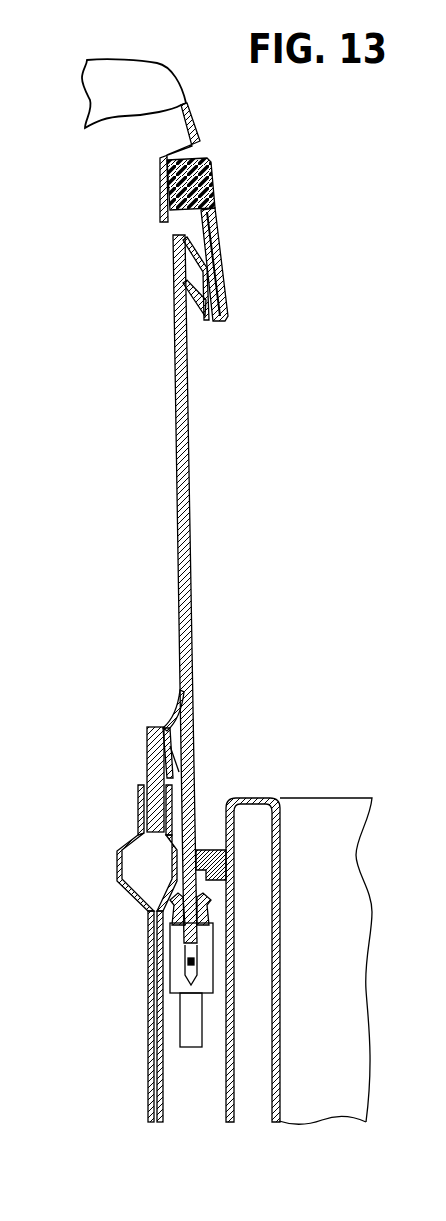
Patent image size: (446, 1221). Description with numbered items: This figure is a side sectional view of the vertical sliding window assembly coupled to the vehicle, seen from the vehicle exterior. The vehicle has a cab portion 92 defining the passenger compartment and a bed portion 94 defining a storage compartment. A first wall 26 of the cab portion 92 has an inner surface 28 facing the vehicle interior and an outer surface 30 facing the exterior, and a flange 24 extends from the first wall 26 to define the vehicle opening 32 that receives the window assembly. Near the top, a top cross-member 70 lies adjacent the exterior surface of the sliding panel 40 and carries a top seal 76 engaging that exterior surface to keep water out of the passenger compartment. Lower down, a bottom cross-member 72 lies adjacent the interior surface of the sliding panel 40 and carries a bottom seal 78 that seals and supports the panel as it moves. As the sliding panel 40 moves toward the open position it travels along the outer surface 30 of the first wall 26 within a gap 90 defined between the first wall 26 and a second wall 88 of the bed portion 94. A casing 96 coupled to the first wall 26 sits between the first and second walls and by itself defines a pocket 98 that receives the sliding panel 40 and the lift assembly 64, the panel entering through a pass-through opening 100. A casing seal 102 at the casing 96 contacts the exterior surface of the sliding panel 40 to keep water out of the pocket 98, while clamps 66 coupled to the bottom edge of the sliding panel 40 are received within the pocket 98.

The cab portion 92 is at (125, 72).
The flange 24 is at (158, 206).
The top cross-member 70 is at (210, 186).
The top seal 76 is at (211, 331).
The sliding panel 40 is at (188, 490).
The bottom seal 78 is at (161, 720).
The bottom cross-member 72 is at (158, 724).
The vehicle opening 32 is at (148, 788).
The first wall 26 is at (140, 801).
The casing seal 102 is at (173, 864).
The inner surface 28 is at (144, 1014).
The lift assembly 64 is at (153, 1040).
The clamps 66 is at (215, 958).
The second wall 88 is at (232, 837).
The bed portion 94 is at (333, 805).
The casing 96 is at (221, 1091).
The gap 90 is at (205, 816).
The pass-through opening 100 is at (209, 836).
The pocket 98 is at (203, 1068).
The outer surface 30 is at (176, 1080).